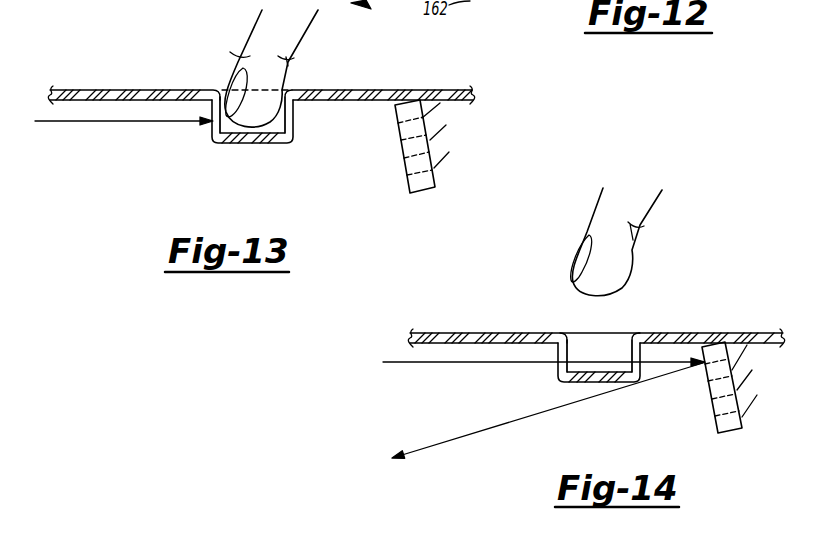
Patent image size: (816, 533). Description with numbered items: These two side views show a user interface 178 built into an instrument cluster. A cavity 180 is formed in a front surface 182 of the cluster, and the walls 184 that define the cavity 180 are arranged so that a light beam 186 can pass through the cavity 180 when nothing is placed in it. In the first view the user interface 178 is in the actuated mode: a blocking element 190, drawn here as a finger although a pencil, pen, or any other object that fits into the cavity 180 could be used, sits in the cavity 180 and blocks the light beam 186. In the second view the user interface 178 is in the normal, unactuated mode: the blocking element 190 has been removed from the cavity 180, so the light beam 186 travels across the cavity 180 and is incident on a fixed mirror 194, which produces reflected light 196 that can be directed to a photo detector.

In FIG. 13, the user interface 178 is at (244, 144).
In FIG. 14, the user interface 178 is at (593, 383).
In FIG. 13, the cavity 180 is at (278, 125).
In FIG. 14, the cavity 180 is at (625, 358).
In FIG. 13, the front surface 182 is at (131, 88).
In FIG. 14, the front surface 182 is at (533, 333).
In FIG. 13, the walls 184 is at (212, 132).
In FIG. 14, the walls 184 is at (557, 368).
In FIG. 13, the light beam 186 is at (50, 124).
In FIG. 14, the light beam 186 is at (415, 363).
In FIG. 13, the blocking element 190 is at (237, 57).
In FIG. 14, the blocking element 190 is at (628, 243).
In FIG. 13, the fixed mirror 194 is at (408, 182).
In FIG. 14, the fixed mirror 194 is at (715, 421).
In FIG. 14, the reflected light 196 is at (452, 440).